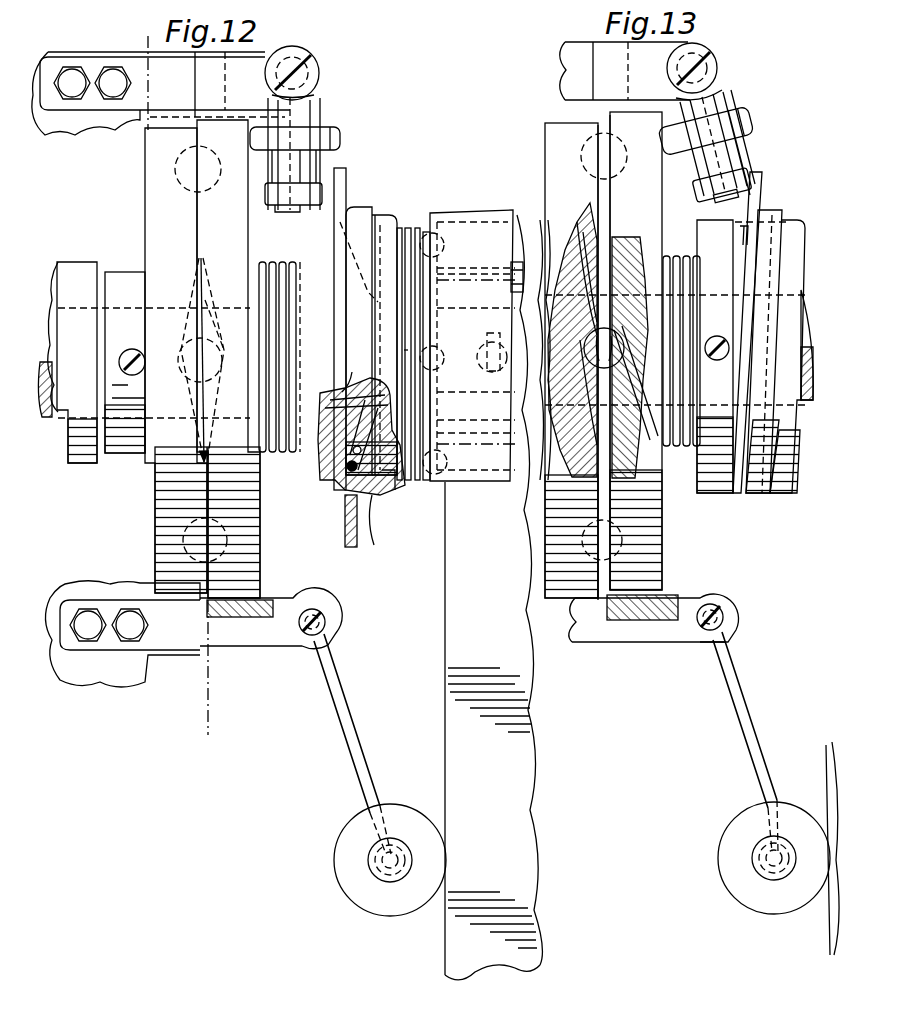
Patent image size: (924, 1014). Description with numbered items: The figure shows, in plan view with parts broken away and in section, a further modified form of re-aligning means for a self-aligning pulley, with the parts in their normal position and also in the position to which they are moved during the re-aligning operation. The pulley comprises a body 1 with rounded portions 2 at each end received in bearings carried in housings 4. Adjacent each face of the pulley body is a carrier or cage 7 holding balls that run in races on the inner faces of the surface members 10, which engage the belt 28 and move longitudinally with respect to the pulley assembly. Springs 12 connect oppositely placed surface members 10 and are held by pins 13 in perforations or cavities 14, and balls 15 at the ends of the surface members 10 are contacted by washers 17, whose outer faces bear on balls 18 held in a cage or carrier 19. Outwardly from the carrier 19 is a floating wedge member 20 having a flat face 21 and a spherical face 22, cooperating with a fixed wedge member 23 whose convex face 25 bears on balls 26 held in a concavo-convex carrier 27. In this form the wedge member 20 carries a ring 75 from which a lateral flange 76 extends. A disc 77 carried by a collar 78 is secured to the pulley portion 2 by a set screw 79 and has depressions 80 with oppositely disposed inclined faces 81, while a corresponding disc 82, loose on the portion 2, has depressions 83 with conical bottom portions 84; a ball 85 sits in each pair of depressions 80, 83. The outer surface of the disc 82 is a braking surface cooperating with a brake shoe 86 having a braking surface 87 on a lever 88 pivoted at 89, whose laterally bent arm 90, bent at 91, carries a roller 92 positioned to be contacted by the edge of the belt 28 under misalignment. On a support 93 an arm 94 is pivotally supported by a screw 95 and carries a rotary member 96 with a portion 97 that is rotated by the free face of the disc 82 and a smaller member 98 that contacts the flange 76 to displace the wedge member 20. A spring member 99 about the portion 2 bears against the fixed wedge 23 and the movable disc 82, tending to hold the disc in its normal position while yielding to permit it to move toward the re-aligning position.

In FIG. 12, the body 1 is at (520, 286).
In FIG. 12, the rounded portions 2 is at (50, 318).
In FIG. 13, the rounded portions 2 is at (808, 362).
In FIG. 12, the housings 4 is at (60, 266).
In FIG. 12, the carrier or cage 7 is at (517, 266).
In FIG. 12, the surface members 10 is at (444, 236).
In FIG. 12, the springs 12 is at (480, 364).
In FIG. 12, the pins 13 is at (496, 376).
In FIG. 12, the perforations or cavities 14 is at (145, 36).
In FIG. 12, the balls 15 is at (428, 234).
In FIG. 12, the washers 17 is at (416, 230).
In FIG. 12, the balls 18 is at (398, 360).
In FIG. 12, the cage or carrier 19 is at (401, 228).
In FIG. 12, the floating wedge member 20 is at (390, 224).
In FIG. 13, the floating wedge member 20 is at (796, 236).
In FIG. 12, the flat face 21 is at (395, 492).
In FIG. 12, the spherical face 22 is at (374, 530).
In FIG. 12, the fixed wedge member 23 is at (318, 470).
In FIG. 13, the fixed wedge member 23 is at (706, 226).
In FIG. 12, the convex face 25 is at (345, 452).
In FIG. 12, the balls 26 is at (355, 472).
In FIG. 12, the carrier or cage 27 is at (360, 370).
In FIG. 13, the carrier or cage 27 is at (746, 226).
In FIG. 12, the belt 28 is at (456, 640).
In FIG. 13, the belt 28 is at (828, 770).
In FIG. 12, the ring 75 is at (362, 210).
In FIG. 13, the ring 75 is at (781, 214).
In FIG. 12, the lateral flange 76 is at (348, 180).
In FIG. 13, the lateral flange 76 is at (765, 190).
In FIG. 12, the disc 77 is at (162, 518).
In FIG. 13, the disc 77 is at (560, 516).
In FIG. 12, the collar 78 is at (130, 456).
In FIG. 13, the collar 78 is at (540, 265).
In FIG. 12, the set screw 79 is at (130, 349).
In FIG. 12, the depressions 80 is at (190, 336).
In FIG. 13, the depressions 80 is at (573, 262).
In FIG. 12, the inclined faces 81 is at (192, 292).
In FIG. 13, the inclined faces 81 is at (580, 232).
In FIG. 12, the disc 82 is at (262, 518).
In FIG. 13, the disc 82 is at (665, 560).
In FIG. 12, the depressions 83 is at (218, 336).
In FIG. 13, the depressions 83 is at (650, 442).
In FIG. 12, the conical bottom portions 84 is at (215, 296).
In FIG. 13, the conical bottom portions 84 is at (636, 258).
In FIG. 12, the ball or rotary member 85 is at (176, 170).
In FIG. 13, the ball or rotary member 85 is at (582, 155).
In FIG. 12, the brake shoe 86 is at (222, 614).
In FIG. 13, the brake shoe 86 is at (612, 623).
In FIG. 12, the braking surface 87 is at (207, 604).
In FIG. 13, the braking surface 87 is at (652, 623).
In FIG. 12, the lever 88 is at (288, 608).
In FIG. 13, the lever 88 is at (689, 612).
In FIG. 12, the pivot 89 is at (333, 618).
In FIG. 13, the pivot 89 is at (728, 615).
In FIG. 12, the arm 90 is at (362, 756).
In FIG. 13, the arm 90 is at (750, 696).
In FIG. 12, the lateral bend 91 is at (378, 872).
In FIG. 13, the lateral bend 91 is at (774, 882).
In FIG. 12, the roller 92 is at (370, 902).
In FIG. 13, the roller 92 is at (735, 886).
In FIG. 12, the support 93 is at (170, 92).
In FIG. 13, the support 93 is at (583, 70).
In FIG. 12, the arm 94 is at (318, 112).
In FIG. 13, the arm 94 is at (722, 106).
In FIG. 12, the screw 95 is at (306, 70).
In FIG. 13, the screw 95 is at (706, 63).
In FIG. 12, the rotary member 96 is at (318, 163).
In FIG. 13, the rotary member 96 is at (740, 160).
In FIG. 12, the engaging portion 97 is at (320, 136).
In FIG. 13, the engaging portion 97 is at (745, 126).
In FIG. 12, the engaging member 98 is at (265, 196).
In FIG. 13, the engaging member 98 is at (752, 178).
In FIG. 12, the spring member 99 is at (278, 276).
In FIG. 13, the spring member 99 is at (681, 262).